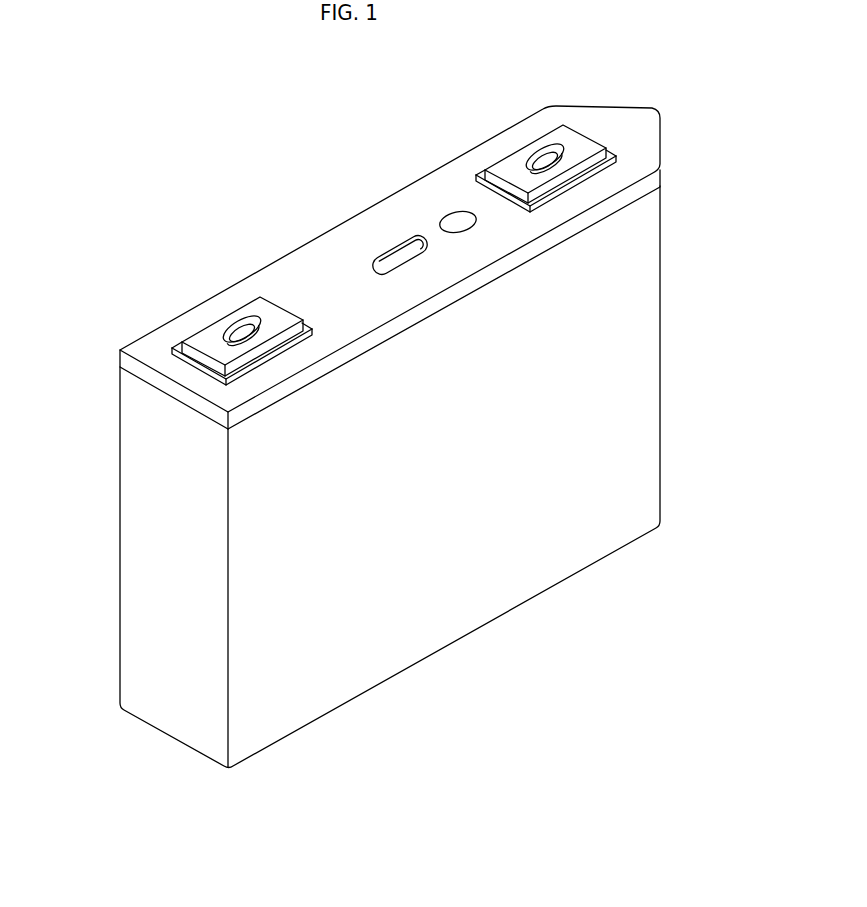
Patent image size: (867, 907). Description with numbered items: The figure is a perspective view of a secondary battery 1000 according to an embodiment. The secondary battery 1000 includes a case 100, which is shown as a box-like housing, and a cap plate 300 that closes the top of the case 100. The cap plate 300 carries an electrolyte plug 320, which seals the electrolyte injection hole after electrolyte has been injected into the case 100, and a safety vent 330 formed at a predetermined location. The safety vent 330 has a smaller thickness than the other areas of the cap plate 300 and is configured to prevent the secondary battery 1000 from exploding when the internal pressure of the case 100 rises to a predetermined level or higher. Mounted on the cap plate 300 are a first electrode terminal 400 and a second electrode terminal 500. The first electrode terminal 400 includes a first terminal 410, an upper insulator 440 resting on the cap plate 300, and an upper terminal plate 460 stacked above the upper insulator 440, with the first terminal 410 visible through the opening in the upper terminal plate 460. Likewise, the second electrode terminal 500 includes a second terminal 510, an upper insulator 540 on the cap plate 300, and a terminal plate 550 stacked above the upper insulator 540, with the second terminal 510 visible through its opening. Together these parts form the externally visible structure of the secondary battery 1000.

The secondary battery 1000 is at (140, 135).
The case 100 is at (648, 306).
The cap plate 300 is at (335, 247).
The electrolyte plug 320 is at (455, 216).
The safety vent 330 is at (403, 250).
The first electrode terminal 400 is at (192, 327).
The first terminal 410 is at (237, 330).
The upper insulator 440 is at (176, 346).
The upper terminal plate 460 is at (272, 303).
The second electrode terminal 500 is at (597, 130).
The second terminal 510 is at (540, 156).
The upper insulator 540 is at (483, 168).
The terminal plate 550 is at (563, 130).